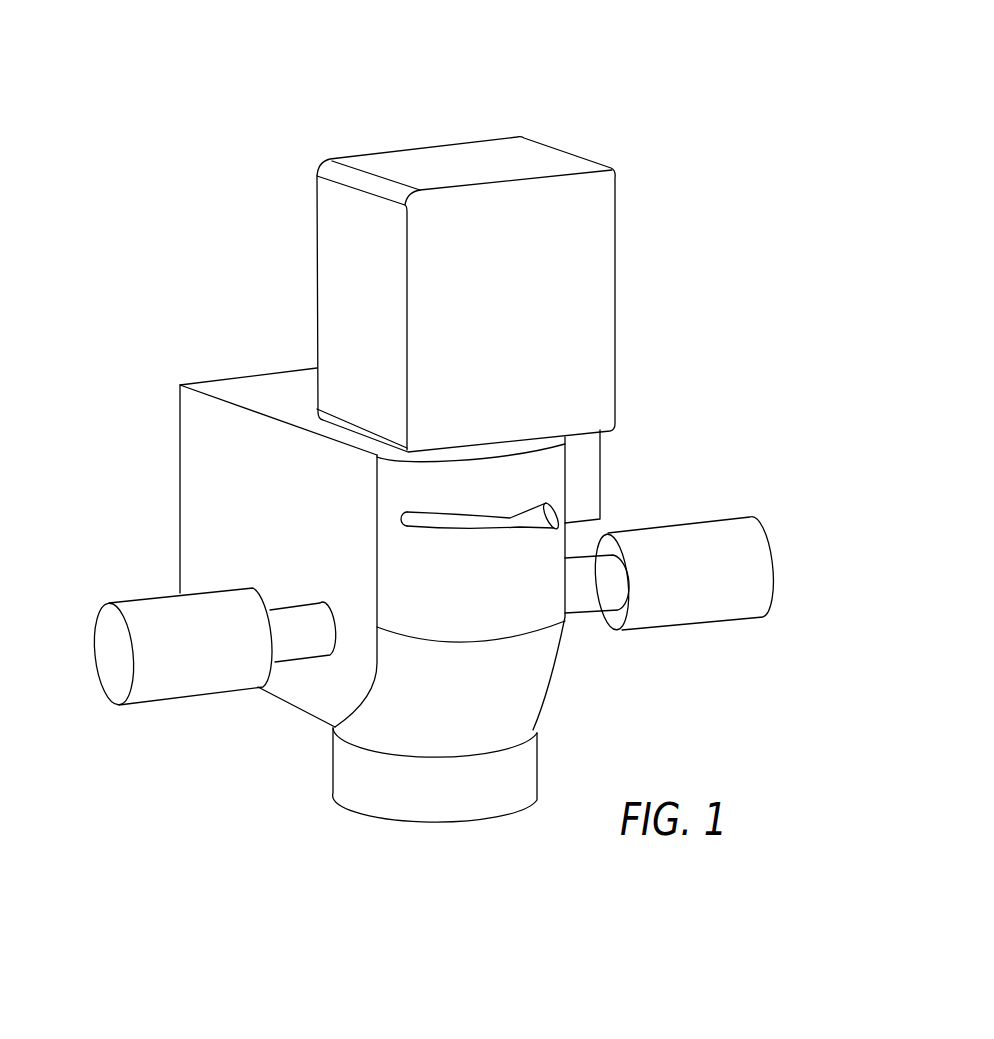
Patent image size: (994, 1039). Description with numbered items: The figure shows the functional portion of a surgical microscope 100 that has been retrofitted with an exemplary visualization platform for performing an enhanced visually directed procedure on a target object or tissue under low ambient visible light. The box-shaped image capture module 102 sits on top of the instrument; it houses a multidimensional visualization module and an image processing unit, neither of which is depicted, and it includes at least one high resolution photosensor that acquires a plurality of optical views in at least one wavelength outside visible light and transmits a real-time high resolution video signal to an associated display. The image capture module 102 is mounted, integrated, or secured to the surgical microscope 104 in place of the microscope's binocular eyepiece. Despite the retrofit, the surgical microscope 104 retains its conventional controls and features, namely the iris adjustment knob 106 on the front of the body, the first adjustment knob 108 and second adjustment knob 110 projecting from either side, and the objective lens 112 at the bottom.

The surgical microscope 100 is at (582, 102).
The image capture module 102 is at (615, 312).
The surgical microscope 104 is at (648, 510).
The iris adjustment knob 106 is at (556, 506).
The first adjustment knob 108 is at (110, 657).
The second adjustment knob 110 is at (772, 587).
The objective lens 112 is at (435, 823).